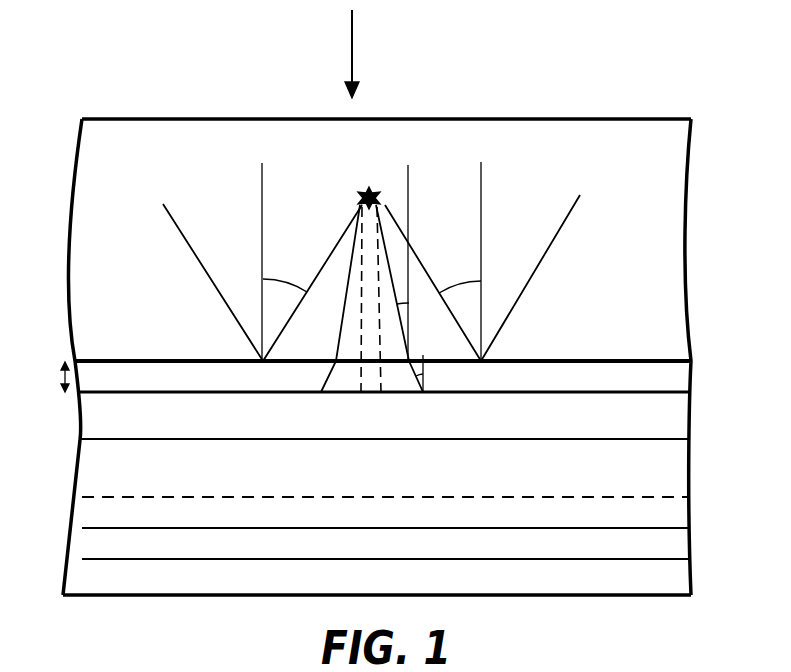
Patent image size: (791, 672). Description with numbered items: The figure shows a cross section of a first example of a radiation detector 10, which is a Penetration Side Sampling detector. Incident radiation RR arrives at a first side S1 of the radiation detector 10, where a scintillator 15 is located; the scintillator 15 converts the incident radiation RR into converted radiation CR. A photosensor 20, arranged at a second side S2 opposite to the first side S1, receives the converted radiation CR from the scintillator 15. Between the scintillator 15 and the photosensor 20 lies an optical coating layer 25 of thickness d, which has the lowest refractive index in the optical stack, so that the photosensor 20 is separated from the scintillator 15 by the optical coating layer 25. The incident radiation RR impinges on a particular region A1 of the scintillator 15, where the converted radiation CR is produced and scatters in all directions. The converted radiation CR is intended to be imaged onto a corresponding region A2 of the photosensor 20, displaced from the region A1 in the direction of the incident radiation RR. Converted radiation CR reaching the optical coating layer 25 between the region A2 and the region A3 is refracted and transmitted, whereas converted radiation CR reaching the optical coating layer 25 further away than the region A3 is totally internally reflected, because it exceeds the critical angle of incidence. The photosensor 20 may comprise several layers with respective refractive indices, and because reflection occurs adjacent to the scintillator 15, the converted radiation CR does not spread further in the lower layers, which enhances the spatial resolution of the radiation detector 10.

The radiation detector 10 is at (80, 97).
The scintillator 15 is at (703, 119).
The photosensor 20 is at (698, 397).
The optical coating layer 25 is at (697, 363).
The first side S1 is at (638, 108).
The second side S2 is at (648, 608).
The incident radiation RR is at (352, 37).
The region of the scintillator A1 is at (372, 189).
The corresponding imaged region A2 is at (381, 394).
The region of the optical coating layer A3 is at (492, 365).
The converted radiation CR is at (354, 216).
The thickness d is at (60, 388).